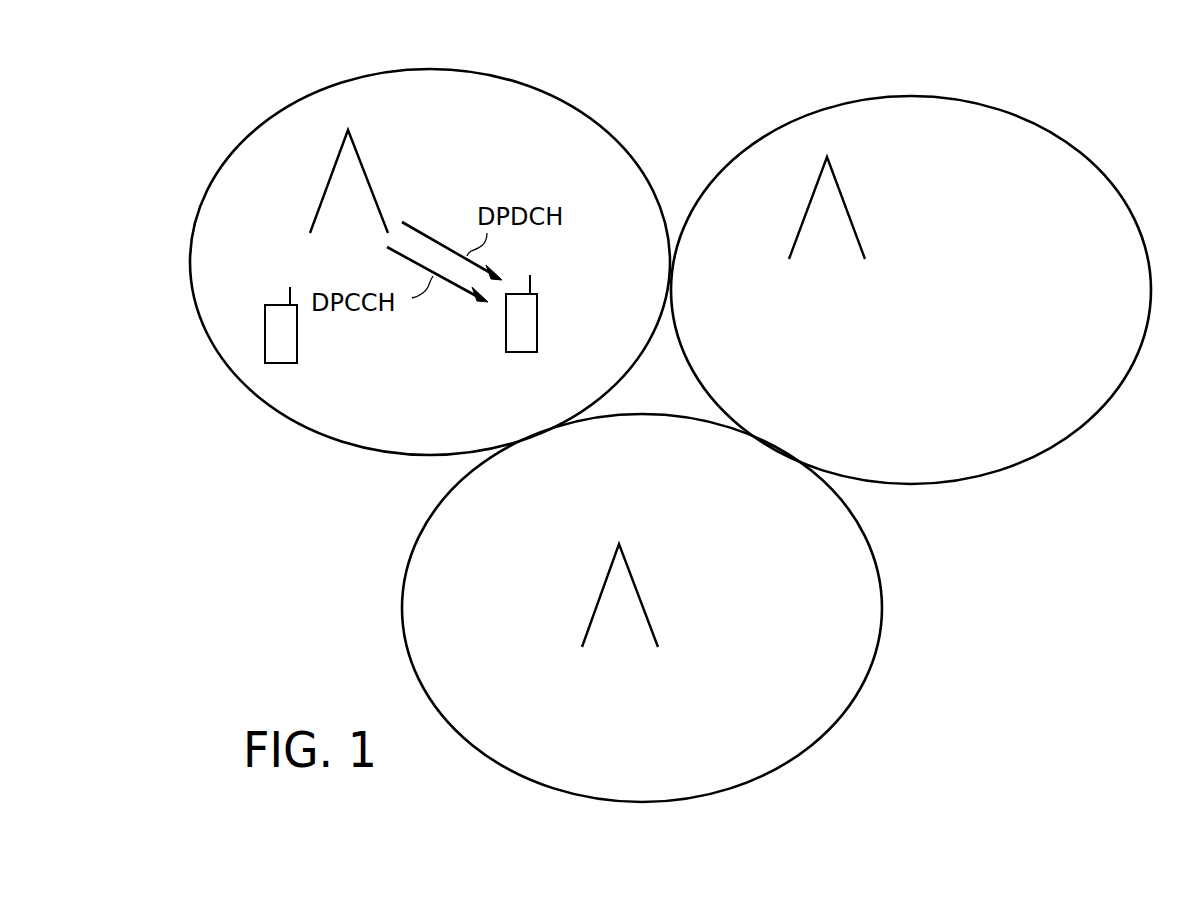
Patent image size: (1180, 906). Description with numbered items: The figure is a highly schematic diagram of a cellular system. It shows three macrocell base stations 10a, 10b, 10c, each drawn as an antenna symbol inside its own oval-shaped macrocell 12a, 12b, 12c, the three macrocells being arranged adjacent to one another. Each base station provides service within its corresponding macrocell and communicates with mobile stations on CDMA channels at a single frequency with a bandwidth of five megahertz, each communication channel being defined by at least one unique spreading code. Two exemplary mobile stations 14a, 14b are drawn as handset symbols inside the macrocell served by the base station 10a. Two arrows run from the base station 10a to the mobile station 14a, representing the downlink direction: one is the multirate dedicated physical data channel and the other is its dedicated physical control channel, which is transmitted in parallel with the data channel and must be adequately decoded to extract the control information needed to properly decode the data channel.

The macrocell base station 10a is at (365, 169).
The macrocell base station 10b is at (846, 199).
The macrocell base station 10c is at (636, 584).
The macrocell 12a is at (603, 129).
The macrocell 12b is at (1093, 162).
The macrocell 12c is at (882, 646).
The mobile station 14a is at (537, 332).
The mobile station 14b is at (297, 347).